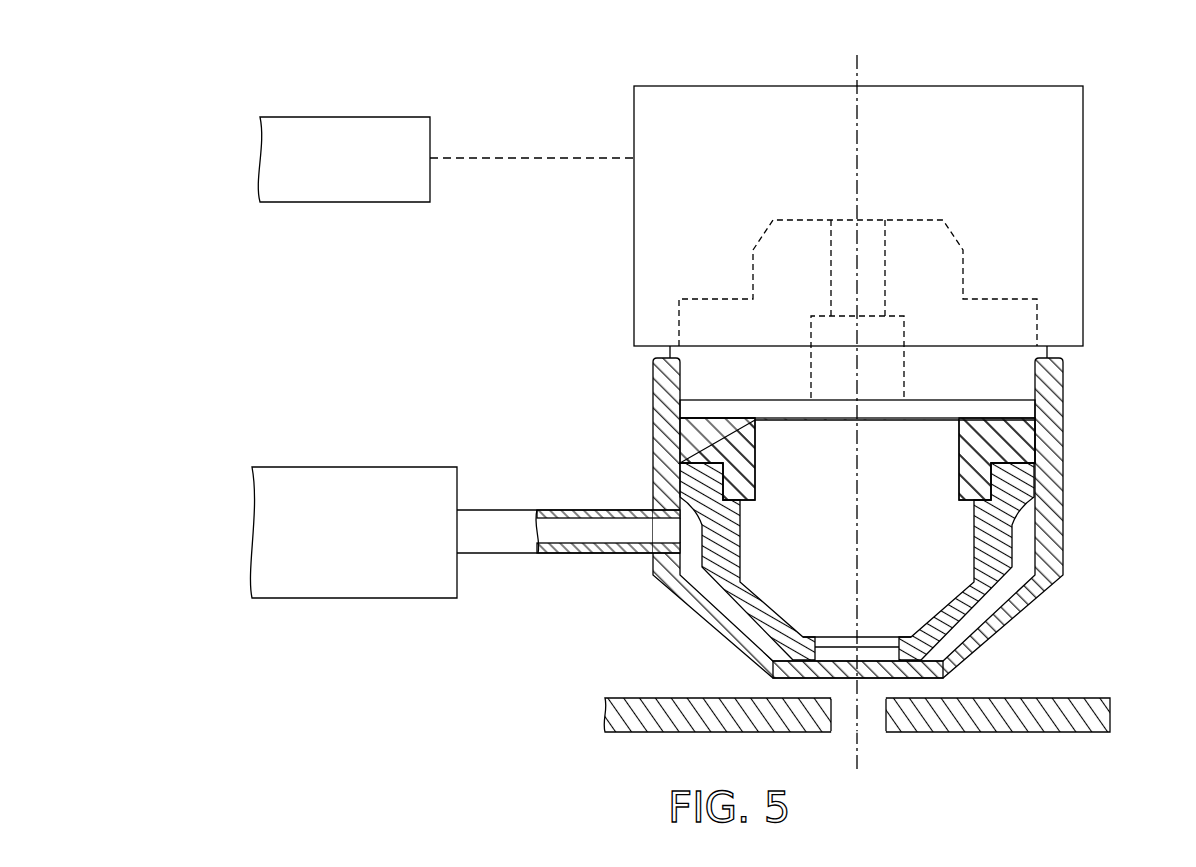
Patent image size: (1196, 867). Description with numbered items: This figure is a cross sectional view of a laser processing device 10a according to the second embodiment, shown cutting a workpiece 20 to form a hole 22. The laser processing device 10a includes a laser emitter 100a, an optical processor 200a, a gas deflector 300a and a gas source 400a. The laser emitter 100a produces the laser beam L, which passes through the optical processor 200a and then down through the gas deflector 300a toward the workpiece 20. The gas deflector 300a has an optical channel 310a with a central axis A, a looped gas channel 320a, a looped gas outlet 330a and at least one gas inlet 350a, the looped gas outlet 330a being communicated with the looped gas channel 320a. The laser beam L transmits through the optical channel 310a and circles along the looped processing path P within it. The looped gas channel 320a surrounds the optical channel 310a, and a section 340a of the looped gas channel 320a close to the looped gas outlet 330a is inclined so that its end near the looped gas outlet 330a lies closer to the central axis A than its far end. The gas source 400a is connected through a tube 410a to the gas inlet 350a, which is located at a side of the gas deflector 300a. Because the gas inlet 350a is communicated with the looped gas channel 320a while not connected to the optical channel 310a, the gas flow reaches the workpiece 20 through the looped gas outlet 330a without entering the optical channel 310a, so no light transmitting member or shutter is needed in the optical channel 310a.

The laser processing device 10a is at (203, 83).
The laser emitter 100a is at (342, 116).
The optical processor 200a is at (1012, 86).
The gas deflector 300a is at (917, 562).
The optical channel 310a is at (915, 485).
The looped gas channel 320a is at (984, 632).
The looped gas outlet 330a is at (903, 682).
The section of the looped gas channel 340a is at (968, 666).
The gas inlet 350a is at (676, 535).
The gas source 400a is at (343, 466).
The tube 410a is at (497, 510).
The workpiece 20 is at (1102, 713).
The hole 22 is at (843, 710).
The looped processing path P is at (881, 705).
The laser beam L is at (531, 157).
The central axis A is at (856, 401).